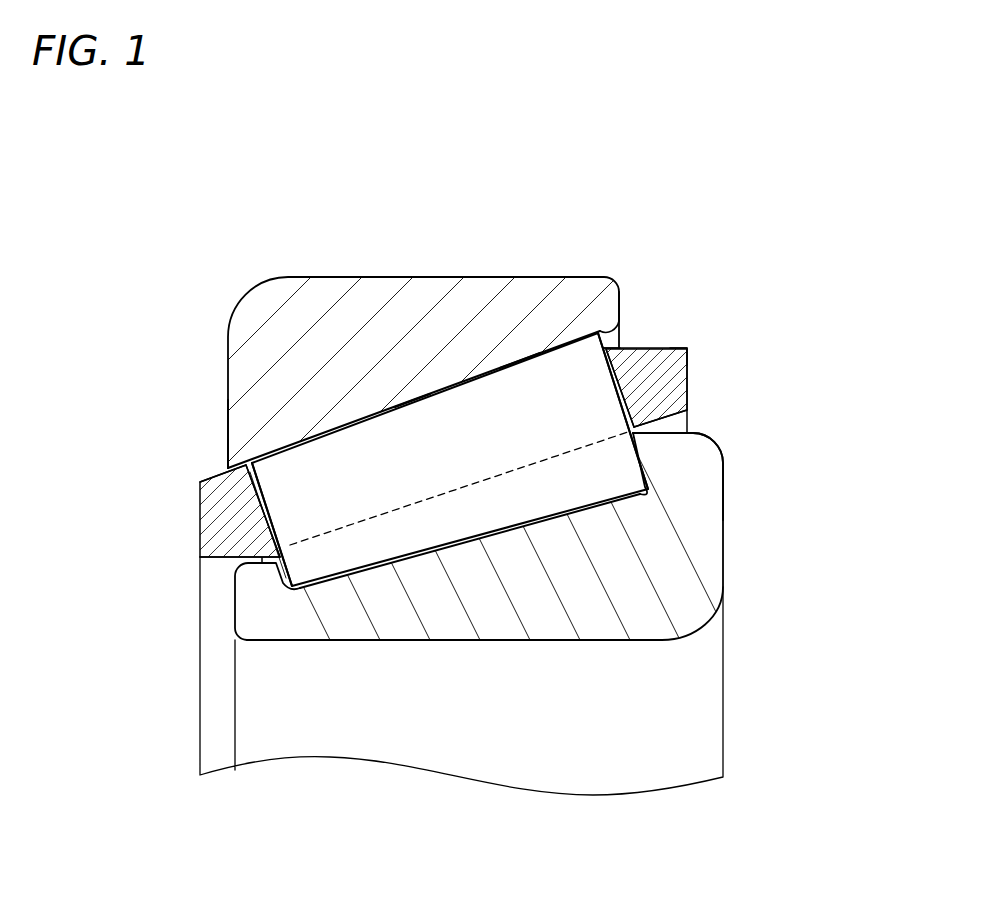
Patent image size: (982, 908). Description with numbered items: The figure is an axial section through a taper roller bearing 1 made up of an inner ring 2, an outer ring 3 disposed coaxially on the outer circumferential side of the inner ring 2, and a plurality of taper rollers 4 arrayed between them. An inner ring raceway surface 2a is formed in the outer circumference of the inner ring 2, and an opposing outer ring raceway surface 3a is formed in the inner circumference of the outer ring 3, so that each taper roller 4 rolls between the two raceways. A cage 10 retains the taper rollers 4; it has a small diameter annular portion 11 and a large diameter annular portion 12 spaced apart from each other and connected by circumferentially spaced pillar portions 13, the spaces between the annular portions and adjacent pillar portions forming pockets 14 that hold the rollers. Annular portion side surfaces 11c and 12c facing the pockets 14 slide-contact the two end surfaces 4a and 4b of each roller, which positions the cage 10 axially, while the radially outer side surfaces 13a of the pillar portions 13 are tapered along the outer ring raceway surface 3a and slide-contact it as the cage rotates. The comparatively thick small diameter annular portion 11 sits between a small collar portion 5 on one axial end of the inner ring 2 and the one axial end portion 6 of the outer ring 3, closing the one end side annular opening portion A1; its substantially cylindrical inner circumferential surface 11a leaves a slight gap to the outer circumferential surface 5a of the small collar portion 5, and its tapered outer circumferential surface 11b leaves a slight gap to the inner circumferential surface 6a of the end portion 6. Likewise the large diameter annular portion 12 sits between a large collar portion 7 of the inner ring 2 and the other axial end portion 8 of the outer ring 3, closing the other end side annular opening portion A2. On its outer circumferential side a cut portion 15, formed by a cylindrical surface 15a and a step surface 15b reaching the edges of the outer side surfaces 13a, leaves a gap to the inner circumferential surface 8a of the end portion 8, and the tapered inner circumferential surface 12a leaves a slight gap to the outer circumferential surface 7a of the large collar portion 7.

The taper roller bearing 1 is at (700, 224).
The inner ring 2 is at (515, 645).
The inner ring raceway surface 2a is at (398, 546).
The outer ring 3 is at (333, 274).
The outer ring raceway surface 3a is at (470, 403).
The taper roller 4 is at (285, 443).
The end surface of taper roller 4a is at (278, 574).
The end surface of taper roller 4b is at (652, 467).
The small collar portion 5 is at (247, 592).
The outer circumferential surface of small collar portion 5a is at (293, 543).
The one axial end portion of outer ring 6 is at (240, 440).
The inner circumferential surface of one axial end portion 6a is at (200, 497).
The large collar portion 7 is at (708, 470).
The outer circumferential surface of large collar portion 7a is at (668, 438).
The other axial end portion of outer ring 8 is at (608, 298).
The inner circumferential surface of other axial end portion 8a is at (608, 331).
The cage 10 is at (690, 367).
The small diameter annular portion 11 is at (196, 515).
The inner circumferential surface of small diameter annular portion 11a is at (220, 560).
The outer circumferential surface of small diameter annular portion 11b is at (218, 470).
The annular portion side surface 11c is at (270, 508).
The large diameter annular portion 12 is at (690, 352).
The inner circumferential surface of large diameter annular portion 12a is at (694, 410).
The annular portion side surface 12c is at (607, 368).
The pillar portion 13 is at (526, 400).
The radially outer side surface of pillar portion 13a is at (412, 393).
The pocket 14 is at (215, 532).
The cut portion 15 is at (652, 346).
The cylindrical surface 15a is at (692, 347).
The step surface 15b is at (590, 347).
The one end side annular opening portion A1 is at (128, 568).
The other end side annular opening portion A2 is at (797, 324).